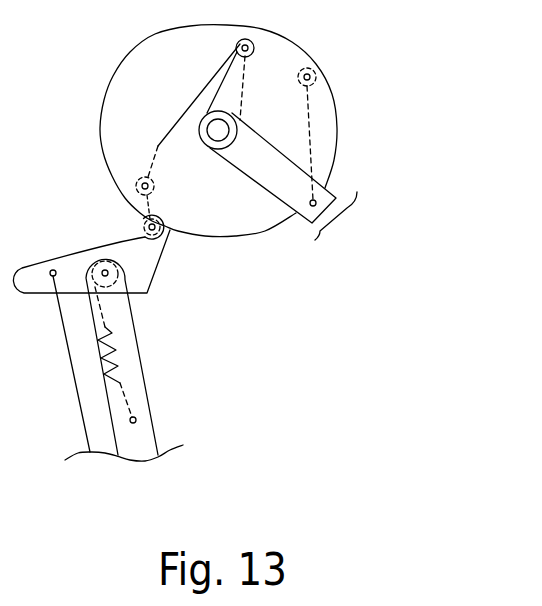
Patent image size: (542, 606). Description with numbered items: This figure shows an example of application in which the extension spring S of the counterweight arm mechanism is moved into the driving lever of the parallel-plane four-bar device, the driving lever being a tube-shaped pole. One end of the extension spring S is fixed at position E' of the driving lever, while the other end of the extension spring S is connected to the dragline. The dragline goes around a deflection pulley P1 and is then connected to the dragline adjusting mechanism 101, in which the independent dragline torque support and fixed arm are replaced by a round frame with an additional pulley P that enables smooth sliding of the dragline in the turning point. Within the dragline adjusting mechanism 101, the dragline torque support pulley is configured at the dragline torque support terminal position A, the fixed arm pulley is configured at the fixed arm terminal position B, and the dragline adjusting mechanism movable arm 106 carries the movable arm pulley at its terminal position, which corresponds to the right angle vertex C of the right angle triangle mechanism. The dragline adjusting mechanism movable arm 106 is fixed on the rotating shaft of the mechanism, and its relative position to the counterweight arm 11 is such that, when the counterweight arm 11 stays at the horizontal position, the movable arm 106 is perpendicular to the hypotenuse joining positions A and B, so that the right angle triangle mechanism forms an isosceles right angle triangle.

The dragline adjusting mechanism 101 is at (408, 82).
The dragline adjusting mechanism movable arm 106 is at (230, 83).
The right angle vertex C is at (251, 40).
The dragline torque support terminal position A is at (309, 68).
The dragline adjusting mechanism fixed arm terminal position B is at (133, 177).
The additional pulley P is at (140, 223).
The deflection pulley P1 is at (110, 273).
The counterweight arm 11 is at (383, 218).
The extension spring S is at (128, 350).
The position of the driving lever E' is at (185, 404).